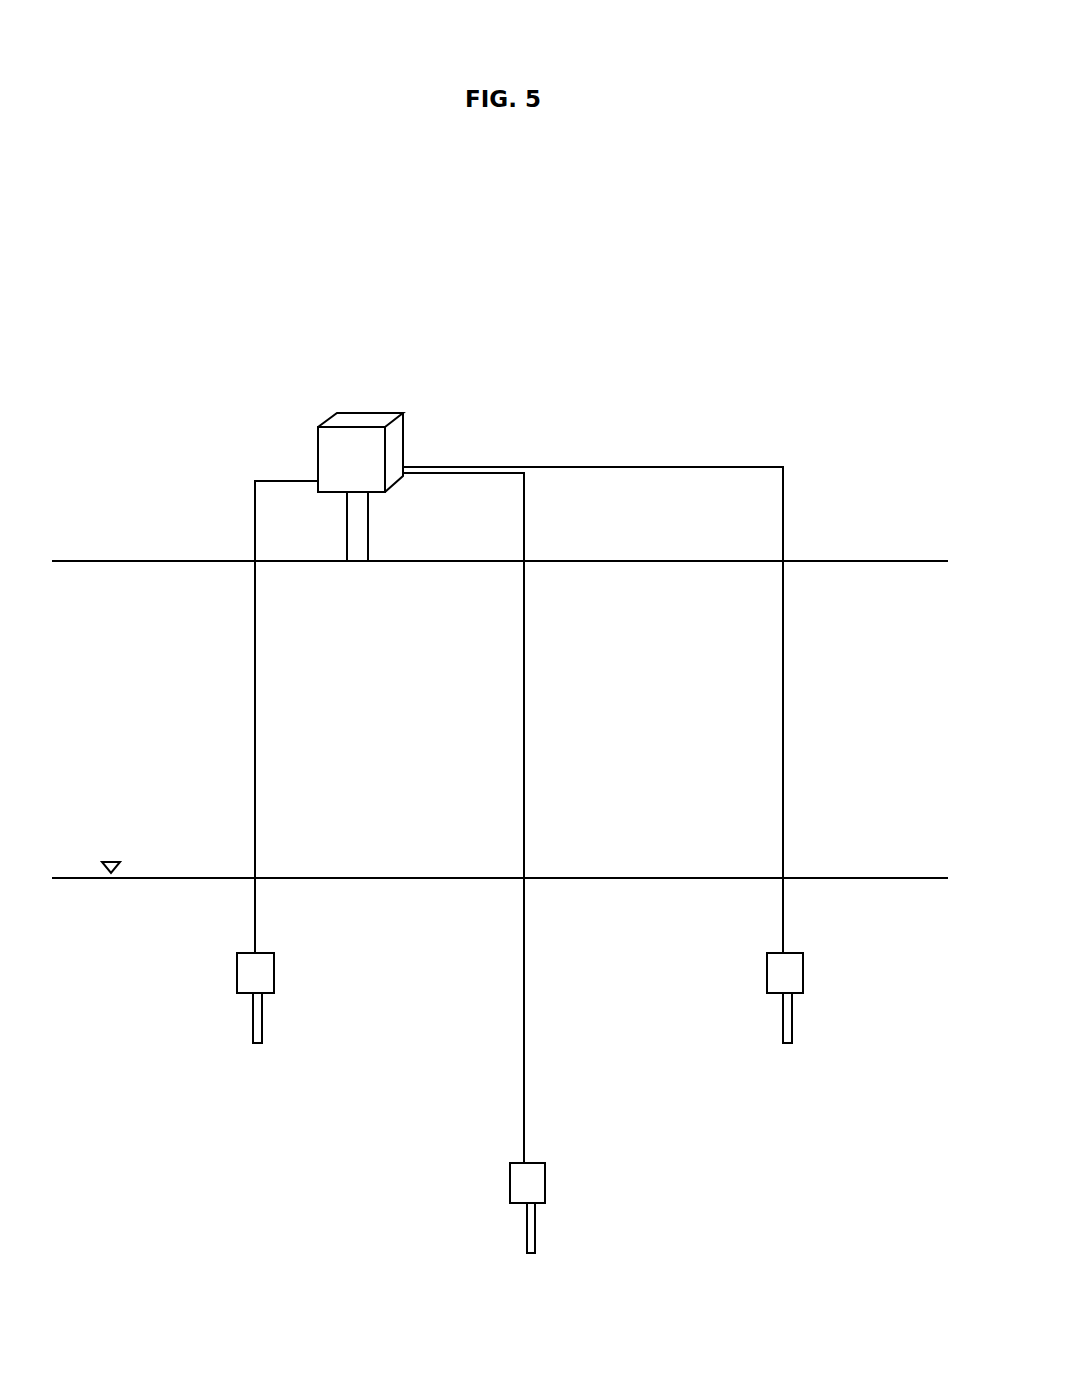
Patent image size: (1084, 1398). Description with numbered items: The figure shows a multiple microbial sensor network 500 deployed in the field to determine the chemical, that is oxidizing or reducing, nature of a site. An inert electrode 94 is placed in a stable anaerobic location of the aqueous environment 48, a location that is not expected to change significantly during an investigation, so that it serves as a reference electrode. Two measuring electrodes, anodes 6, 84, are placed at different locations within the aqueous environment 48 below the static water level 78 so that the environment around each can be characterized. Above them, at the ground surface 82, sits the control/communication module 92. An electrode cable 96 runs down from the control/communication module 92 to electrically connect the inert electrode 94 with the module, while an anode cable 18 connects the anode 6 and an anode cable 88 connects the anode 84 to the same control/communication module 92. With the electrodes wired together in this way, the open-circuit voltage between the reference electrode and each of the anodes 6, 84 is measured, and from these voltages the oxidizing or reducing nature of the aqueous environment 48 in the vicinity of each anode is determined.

The multiple microbial sensor network 500 is at (742, 330).
The ground surface 82 is at (500, 546).
The static water level 78 is at (500, 857).
The aqueous environment 48 is at (170, 955).
The control/communication module 92 is at (405, 433).
The anode cable 88 is at (286, 717).
The electrode cable 96 is at (526, 852).
The anode cable 18 is at (783, 850).
The anode 84 is at (293, 986).
The anode 6 is at (803, 992).
The inert electrode 94 is at (545, 1202).